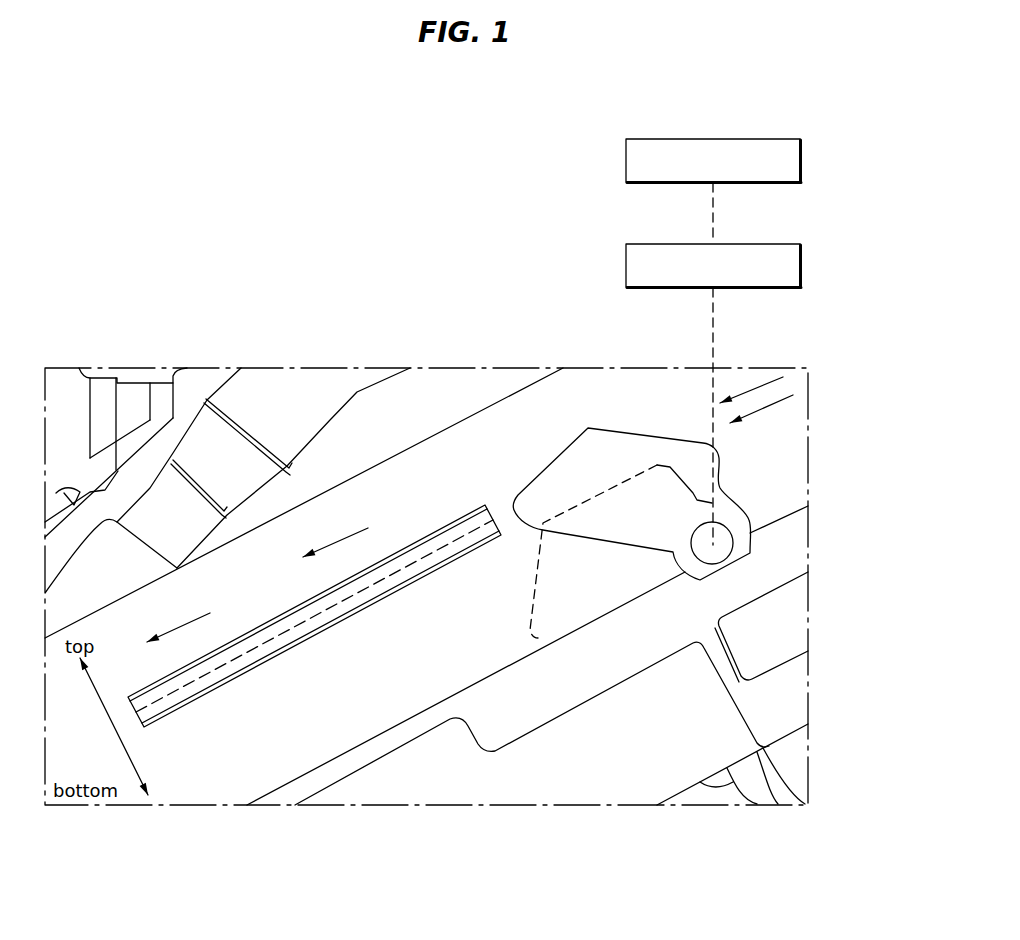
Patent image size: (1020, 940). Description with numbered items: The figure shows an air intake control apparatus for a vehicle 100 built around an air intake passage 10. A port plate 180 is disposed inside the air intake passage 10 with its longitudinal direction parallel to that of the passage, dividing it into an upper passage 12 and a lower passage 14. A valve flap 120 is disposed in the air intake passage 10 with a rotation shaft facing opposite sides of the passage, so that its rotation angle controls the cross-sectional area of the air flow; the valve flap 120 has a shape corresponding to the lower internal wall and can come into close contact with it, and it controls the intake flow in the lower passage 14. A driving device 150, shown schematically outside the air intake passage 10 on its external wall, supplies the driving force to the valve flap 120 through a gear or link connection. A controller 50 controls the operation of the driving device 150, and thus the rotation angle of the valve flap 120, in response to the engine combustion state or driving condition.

The air intake passage 10 is at (318, 492).
The upper passage 12 is at (283, 583).
The lower passage 14 is at (353, 674).
The controller 50 is at (803, 159).
The air intake control apparatus for a vehicle 100 is at (533, 366).
The valve flap 120 is at (722, 488).
The driving device 150 is at (803, 266).
The port plate 180 is at (216, 695).